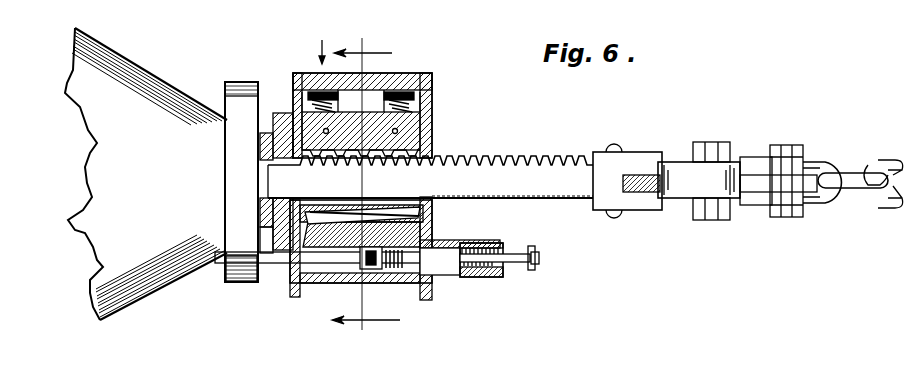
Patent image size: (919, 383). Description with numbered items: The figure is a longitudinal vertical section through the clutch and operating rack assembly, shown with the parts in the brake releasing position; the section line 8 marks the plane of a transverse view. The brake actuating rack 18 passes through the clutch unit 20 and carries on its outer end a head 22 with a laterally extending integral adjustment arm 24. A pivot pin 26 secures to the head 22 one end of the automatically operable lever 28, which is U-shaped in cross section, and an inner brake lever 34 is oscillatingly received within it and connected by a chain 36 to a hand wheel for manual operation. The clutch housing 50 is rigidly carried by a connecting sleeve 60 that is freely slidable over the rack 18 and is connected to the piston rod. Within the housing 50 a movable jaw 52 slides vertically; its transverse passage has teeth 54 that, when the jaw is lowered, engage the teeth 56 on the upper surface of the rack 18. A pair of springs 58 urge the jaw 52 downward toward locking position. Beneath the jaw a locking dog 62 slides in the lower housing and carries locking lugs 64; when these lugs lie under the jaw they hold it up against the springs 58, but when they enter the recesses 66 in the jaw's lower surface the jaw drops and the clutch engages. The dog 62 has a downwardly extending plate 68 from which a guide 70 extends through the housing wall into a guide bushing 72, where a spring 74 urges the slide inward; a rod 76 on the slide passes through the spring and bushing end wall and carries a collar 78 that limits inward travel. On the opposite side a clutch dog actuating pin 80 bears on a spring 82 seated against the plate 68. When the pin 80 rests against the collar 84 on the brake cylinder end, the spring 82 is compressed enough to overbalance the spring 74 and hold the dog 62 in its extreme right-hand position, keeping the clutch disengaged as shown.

The section line 8- 8 is at (373, 185).
The brake actuating rack 18 is at (548, 190).
The clutch unit 20 is at (323, 42).
The head 22 is at (632, 165).
The adjustment arm 24 is at (643, 188).
The pivot pin 26 is at (714, 220).
The automatically operable lever 28 is at (693, 178).
The inner brake lever 34 is at (757, 157).
The chain 36 is at (852, 190).
The housing 50 is at (433, 87).
The movable jaw 52 is at (305, 125).
The teeth 54 is at (398, 150).
The teeth 56 is at (505, 158).
The springs 58 is at (412, 72).
The connecting sleeve 60 is at (161, 174).
The locking dog 62 is at (355, 235).
The locking lugs 64 is at (430, 215).
The recesses 66 is at (345, 214).
The plate 68 is at (430, 231).
The guide 70 is at (445, 262).
The guide bushing 72 is at (475, 277).
The spring 74 is at (478, 248).
The rod 76 is at (510, 258).
The collar 78 is at (533, 266).
The clutch dog actuating pin 80 is at (320, 258).
The spring 82 is at (395, 265).
The collar 84 is at (242, 267).